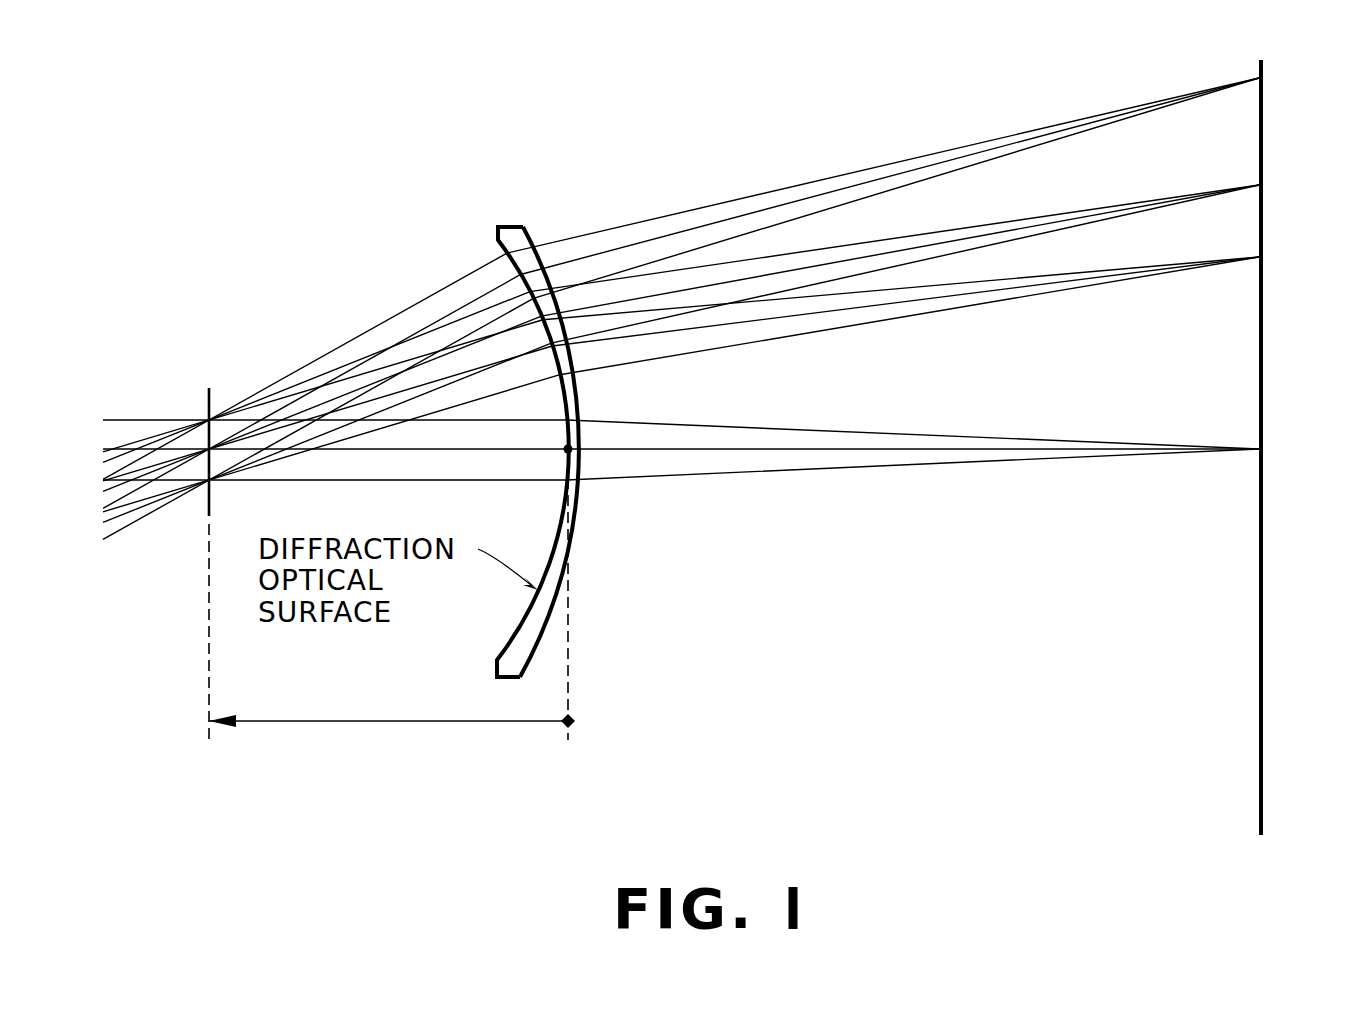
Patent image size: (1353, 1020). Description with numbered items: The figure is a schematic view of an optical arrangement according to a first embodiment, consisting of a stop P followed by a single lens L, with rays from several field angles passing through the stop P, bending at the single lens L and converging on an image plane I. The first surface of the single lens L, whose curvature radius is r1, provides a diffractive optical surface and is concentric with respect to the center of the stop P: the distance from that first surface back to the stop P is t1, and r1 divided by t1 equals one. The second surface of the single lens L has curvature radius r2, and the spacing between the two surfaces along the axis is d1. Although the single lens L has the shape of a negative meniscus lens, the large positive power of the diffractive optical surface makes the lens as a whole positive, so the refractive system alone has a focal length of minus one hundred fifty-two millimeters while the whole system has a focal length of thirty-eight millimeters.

The single lens L is at (545, 405).
The stop P is at (209, 387).
The image plane I is at (1263, 428).
The spacing between surfaces d1 is at (580, 452).
The curvature radius of the first surface r1 is at (505, 621).
The curvature radius of the second surface r2 is at (541, 645).
The distance from the first surface to the stop t1 is at (392, 600).